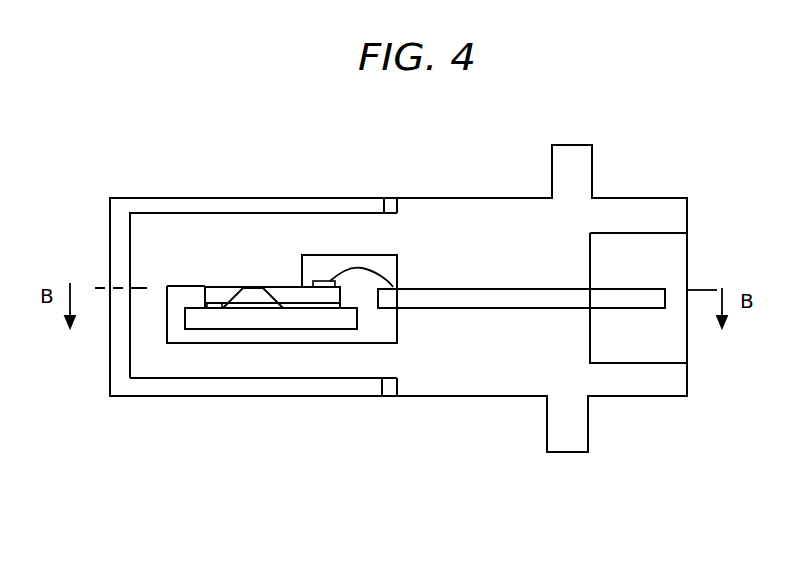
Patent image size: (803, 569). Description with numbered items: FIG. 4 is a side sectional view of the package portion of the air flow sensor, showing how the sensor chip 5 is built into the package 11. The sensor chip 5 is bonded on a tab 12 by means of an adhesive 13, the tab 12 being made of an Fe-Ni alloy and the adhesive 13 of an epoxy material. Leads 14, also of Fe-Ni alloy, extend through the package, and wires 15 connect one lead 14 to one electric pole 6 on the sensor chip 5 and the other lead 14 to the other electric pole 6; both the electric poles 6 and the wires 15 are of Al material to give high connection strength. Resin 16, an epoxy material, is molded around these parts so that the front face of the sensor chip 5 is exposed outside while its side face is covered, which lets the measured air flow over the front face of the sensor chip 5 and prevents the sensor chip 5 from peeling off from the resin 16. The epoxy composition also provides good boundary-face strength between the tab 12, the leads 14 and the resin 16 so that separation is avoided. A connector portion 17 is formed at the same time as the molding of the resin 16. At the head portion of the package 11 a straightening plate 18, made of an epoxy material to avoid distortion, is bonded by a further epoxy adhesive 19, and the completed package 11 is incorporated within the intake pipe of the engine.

The sensor chip 5 is at (230, 288).
The electric pole 6 is at (320, 281).
The package 11 is at (675, 495).
The tab 12 is at (167, 285).
The adhesive 13 is at (208, 303).
The lead 14 is at (628, 295).
The wire 15 is at (393, 285).
The resin 16 is at (482, 388).
The connector portion 17 is at (687, 458).
The straightening plate 18 is at (110, 368).
The adhesive 19 is at (393, 202).